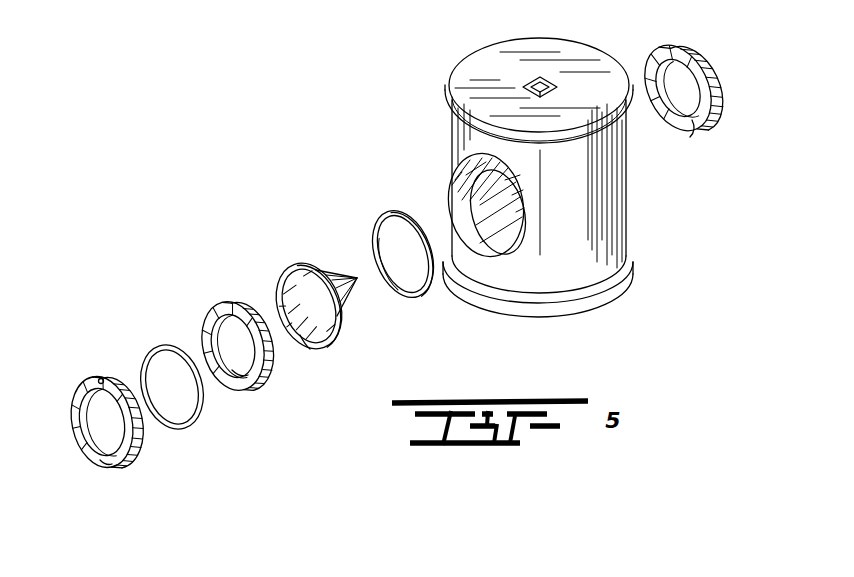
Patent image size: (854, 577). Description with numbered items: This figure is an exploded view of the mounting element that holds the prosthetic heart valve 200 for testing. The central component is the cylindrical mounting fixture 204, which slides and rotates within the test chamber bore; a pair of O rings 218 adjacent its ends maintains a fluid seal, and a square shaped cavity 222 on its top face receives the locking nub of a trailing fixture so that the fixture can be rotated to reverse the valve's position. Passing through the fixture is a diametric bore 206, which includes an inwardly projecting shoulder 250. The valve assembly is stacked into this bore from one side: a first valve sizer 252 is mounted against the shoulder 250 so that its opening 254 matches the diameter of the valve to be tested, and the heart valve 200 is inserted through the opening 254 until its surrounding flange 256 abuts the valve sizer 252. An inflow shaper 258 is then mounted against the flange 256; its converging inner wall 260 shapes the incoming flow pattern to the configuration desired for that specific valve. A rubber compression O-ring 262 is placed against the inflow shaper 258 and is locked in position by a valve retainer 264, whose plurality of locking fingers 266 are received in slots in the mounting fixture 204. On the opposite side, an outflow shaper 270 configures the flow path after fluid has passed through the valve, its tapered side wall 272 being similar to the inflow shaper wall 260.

The heart valve 200 is at (312, 267).
The mounting fixture 204 is at (613, 212).
The diametric bore 206 is at (457, 175).
The O rings 218 is at (446, 99).
The square shaped cavity 222 is at (545, 78).
The shoulder 250 is at (516, 226).
The first valve sizer 252 is at (388, 212).
The opening 254 is at (408, 262).
The flange 256 is at (306, 345).
The inflow shaper 258 is at (222, 303).
The converging inner wall 260 is at (240, 380).
The rubber compression O-ring 262 is at (158, 345).
The valve retainer 264 is at (73, 404).
The locking fingers 266 is at (101, 379).
The outflow shaper 270 is at (683, 57).
The tapered side wall 272 is at (681, 133).